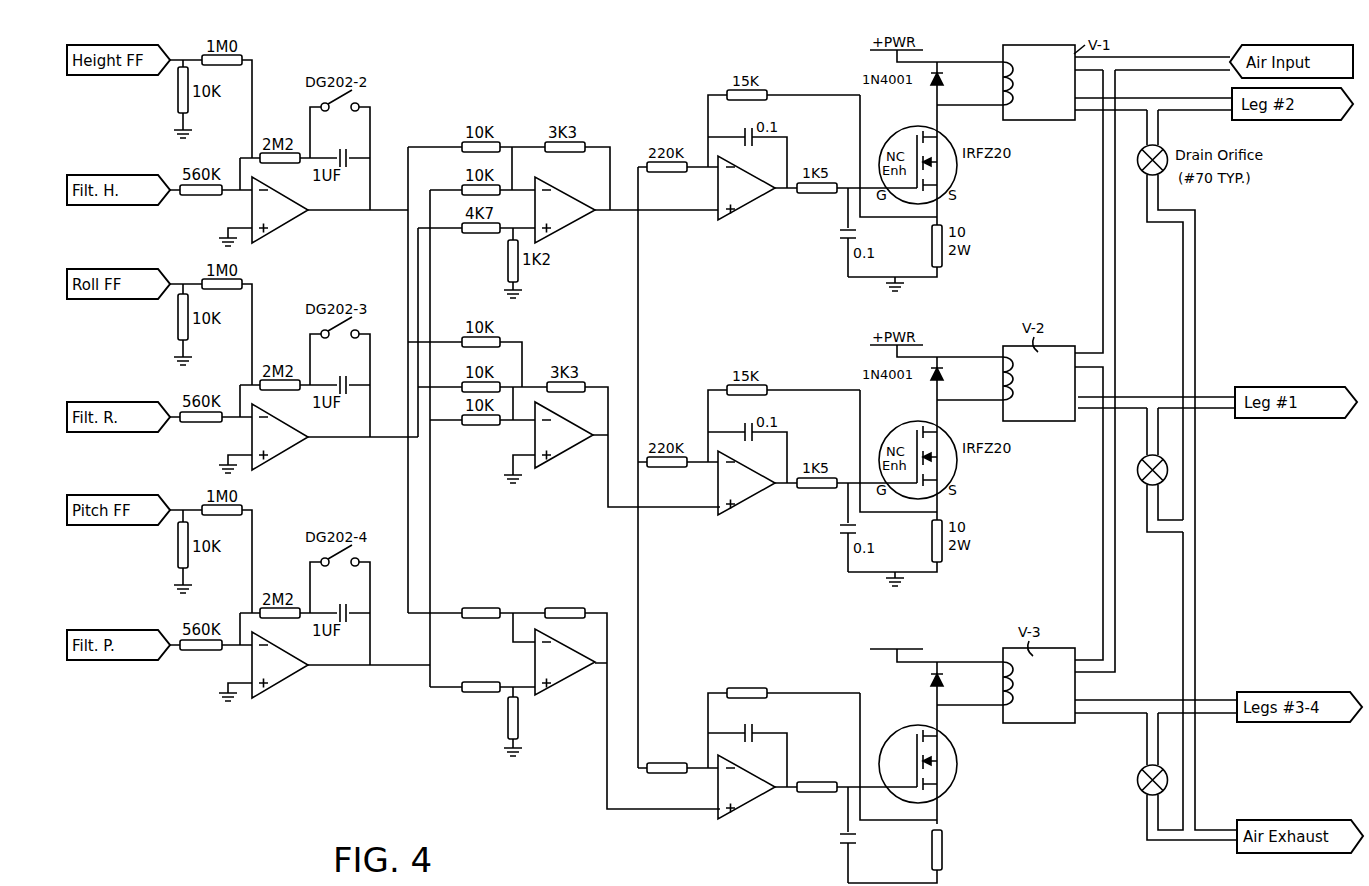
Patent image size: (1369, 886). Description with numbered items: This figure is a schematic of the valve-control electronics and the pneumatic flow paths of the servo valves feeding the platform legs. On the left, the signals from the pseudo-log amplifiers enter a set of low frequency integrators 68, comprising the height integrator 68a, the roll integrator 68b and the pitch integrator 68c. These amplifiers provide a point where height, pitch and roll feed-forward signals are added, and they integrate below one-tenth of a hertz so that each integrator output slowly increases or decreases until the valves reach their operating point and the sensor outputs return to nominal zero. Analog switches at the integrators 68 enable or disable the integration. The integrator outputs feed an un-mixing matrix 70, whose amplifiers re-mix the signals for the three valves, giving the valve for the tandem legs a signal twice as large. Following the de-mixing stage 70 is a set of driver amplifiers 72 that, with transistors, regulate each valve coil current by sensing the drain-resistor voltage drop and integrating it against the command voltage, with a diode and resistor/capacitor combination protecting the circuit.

The low frequency integrators 68 is at (297, 474).
The height integrator 68a is at (343, 237).
The roll integrator 68b is at (343, 464).
The pitch integrator 68c is at (343, 692).
The un-mixing matrix 70 is at (570, 745).
The valve driver amplifiers 72 is at (756, 817).